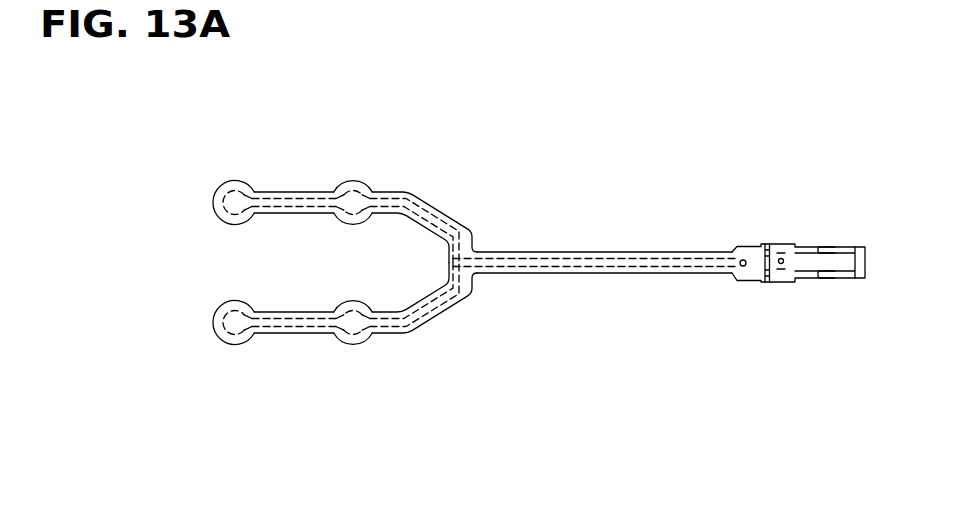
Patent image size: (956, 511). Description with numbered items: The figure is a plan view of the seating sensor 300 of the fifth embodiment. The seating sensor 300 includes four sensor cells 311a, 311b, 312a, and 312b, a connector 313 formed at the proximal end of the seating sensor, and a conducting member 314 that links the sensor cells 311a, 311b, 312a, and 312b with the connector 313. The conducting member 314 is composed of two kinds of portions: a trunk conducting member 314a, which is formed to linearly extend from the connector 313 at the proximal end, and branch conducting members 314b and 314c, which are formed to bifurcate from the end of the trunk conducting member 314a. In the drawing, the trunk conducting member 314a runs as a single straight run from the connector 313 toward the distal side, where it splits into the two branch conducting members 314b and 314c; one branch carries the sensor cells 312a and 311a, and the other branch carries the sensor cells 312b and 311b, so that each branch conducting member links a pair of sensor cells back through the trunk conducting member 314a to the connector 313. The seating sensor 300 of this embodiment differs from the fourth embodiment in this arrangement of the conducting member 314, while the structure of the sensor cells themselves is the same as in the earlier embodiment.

The seating sensor 300 is at (520, 148).
The sensor cell 311a is at (235, 181).
The sensor cell 311b is at (235, 345).
The sensor cell 312a is at (357, 224).
The sensor cell 312b is at (355, 302).
The connector 313 is at (827, 278).
The conducting member 314 is at (690, 251).
The trunk conducting member 314a is at (587, 251).
The branch conducting member 314b is at (295, 192).
The branch conducting member 314c is at (297, 334).